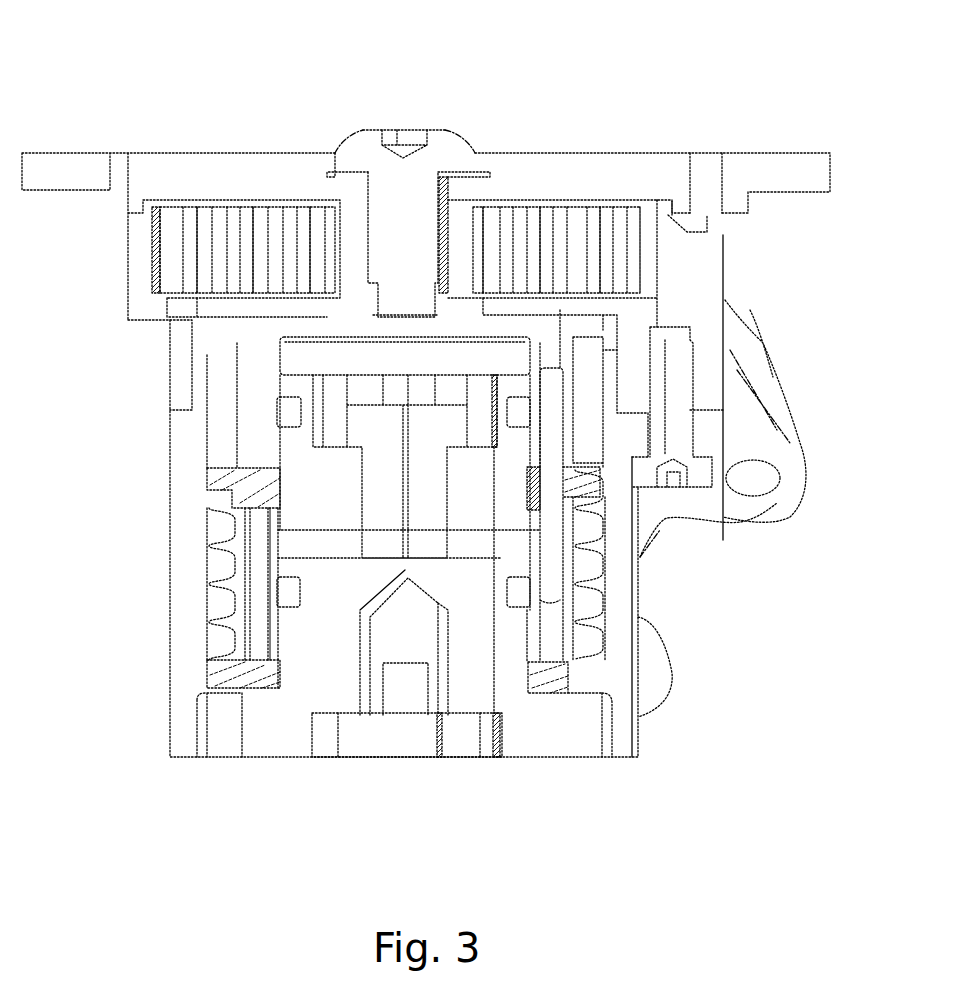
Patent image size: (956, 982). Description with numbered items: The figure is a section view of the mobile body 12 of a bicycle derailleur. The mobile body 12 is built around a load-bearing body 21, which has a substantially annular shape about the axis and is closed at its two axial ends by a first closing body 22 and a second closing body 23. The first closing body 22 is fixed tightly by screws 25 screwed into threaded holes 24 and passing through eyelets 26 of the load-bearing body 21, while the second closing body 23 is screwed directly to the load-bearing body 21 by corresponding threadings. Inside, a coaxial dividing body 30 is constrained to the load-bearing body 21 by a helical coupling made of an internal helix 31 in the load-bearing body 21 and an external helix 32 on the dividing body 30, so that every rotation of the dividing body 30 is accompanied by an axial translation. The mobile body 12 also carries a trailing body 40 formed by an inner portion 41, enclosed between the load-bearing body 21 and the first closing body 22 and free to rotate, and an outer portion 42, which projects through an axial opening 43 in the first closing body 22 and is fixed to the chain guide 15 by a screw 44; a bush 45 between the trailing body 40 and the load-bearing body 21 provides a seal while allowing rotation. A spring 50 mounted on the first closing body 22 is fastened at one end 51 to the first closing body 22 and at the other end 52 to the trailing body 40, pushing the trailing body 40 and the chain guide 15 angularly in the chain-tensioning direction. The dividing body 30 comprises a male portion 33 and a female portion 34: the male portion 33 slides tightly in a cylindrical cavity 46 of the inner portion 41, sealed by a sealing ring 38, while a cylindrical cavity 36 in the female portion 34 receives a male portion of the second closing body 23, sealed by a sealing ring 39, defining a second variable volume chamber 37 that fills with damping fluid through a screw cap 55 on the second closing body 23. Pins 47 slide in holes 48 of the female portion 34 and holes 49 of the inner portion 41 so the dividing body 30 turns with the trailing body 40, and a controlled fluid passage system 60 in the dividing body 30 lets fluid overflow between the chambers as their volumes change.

The mobile body 12 is at (190, 120).
The chain guide 15 is at (530, 168).
The load-bearing body 21 is at (600, 583).
The first closing body 22 is at (700, 285).
The second closing body 23 is at (543, 725).
The threaded holes 24 is at (690, 335).
The screws 25 is at (715, 478).
The eyelets 26 is at (715, 438).
The dividing body 30 is at (265, 445).
The internal helix 31 is at (213, 667).
The external helix 32 is at (210, 633).
The male portion 33 is at (300, 378).
The female portion 34 is at (238, 552).
The cylindrical cavity 36 is at (525, 545).
The second variable volume chamber 37 is at (433, 693).
The sealing ring 38 is at (282, 418).
The sealing ring 39 is at (532, 540).
The trailing body 40 is at (300, 311).
The inner portion 41 is at (250, 395).
The outer portion 42 is at (350, 250).
The axial opening 43 is at (360, 170).
The screw 44 is at (438, 143).
The bush 45 is at (217, 378).
The cylindrical cavity 46 is at (195, 324).
The pins 47 is at (553, 533).
The holes 48 is at (540, 640).
The holes 49 is at (535, 398).
The spring 50 is at (593, 233).
The end 51 is at (657, 250).
The end 52 is at (448, 250).
The screw cap 55 is at (460, 545).
The controlled fluid passage system 60 is at (497, 360).